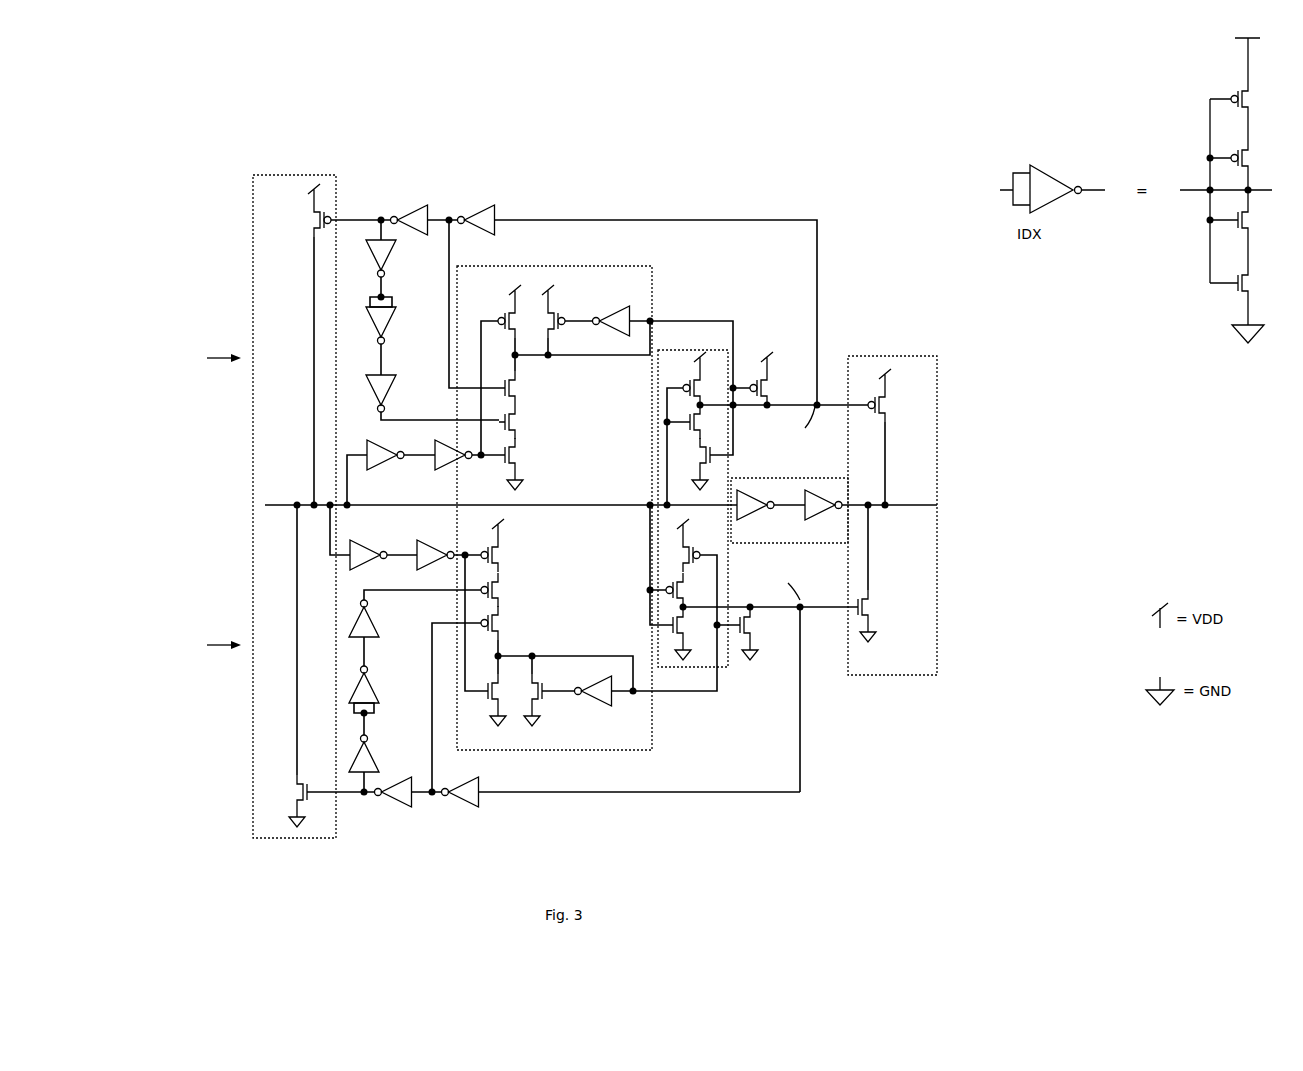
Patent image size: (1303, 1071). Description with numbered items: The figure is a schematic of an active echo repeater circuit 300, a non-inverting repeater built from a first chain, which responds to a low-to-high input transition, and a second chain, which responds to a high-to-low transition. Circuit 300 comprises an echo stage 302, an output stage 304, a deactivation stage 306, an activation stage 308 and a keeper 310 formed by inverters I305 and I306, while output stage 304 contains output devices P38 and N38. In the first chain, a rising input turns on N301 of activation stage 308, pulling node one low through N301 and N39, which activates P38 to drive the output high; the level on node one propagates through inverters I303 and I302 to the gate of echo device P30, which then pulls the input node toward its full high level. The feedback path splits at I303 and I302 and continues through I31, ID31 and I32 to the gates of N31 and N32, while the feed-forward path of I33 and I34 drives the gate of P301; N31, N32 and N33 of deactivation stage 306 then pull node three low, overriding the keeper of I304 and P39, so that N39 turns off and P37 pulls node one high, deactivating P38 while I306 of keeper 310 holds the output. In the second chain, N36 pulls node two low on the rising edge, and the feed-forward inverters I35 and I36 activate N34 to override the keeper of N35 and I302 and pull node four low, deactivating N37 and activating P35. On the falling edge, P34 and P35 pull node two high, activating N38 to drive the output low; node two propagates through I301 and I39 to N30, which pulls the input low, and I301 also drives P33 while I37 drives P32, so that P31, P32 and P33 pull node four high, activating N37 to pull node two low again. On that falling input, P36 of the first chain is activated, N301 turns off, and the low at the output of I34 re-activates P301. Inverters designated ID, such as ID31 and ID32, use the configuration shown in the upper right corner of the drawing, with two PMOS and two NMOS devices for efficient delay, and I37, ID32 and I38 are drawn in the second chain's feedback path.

The active echo repeater circuit 300 is at (571, 510).
The echo stage 302 is at (336, 838).
The output stage 304 is at (932, 677).
The deactivation stage 306 is at (630, 752).
The activation stage 308 is at (725, 668).
The keeper circuit 310 is at (789, 510).
The echo device P30 is at (309, 210).
The echo transistor N30 is at (287, 801).
The inverter I31 is at (368, 258).
The delay inverter ID31 is at (362, 325).
The inverter I32 is at (368, 393).
The inverter I33 is at (385, 464).
The inverter I34 is at (453, 464).
The inverter I35 is at (368, 549).
The inverter I36 is at (435, 547).
The inverter I37 is at (352, 618).
The delay inverter ID32 is at (345, 684).
The inverter I38 is at (352, 753).
The inverter I39 is at (393, 798).
The inverter I301 is at (459, 798).
The inverter I302 is at (409, 208).
The inverter I303 is at (478, 208).
The keeper inverter I304 is at (619, 310).
The inverter I305 is at (755, 514).
The keeper inverter I306 is at (819, 514).
The PMOS transistor P301 is at (491, 311).
The keeper transistor P39 is at (566, 311).
The NMOS transistor N31 is at (522, 388).
The NMOS transistor N32 is at (522, 422).
The NMOS transistor N33 is at (522, 464).
The PMOS transistor P31 is at (503, 545).
The PMOS transistor P32 is at (503, 590).
The PMOS transistor P33 is at (503, 623).
The NMOS transistor N34 is at (483, 700).
The keeper transistor N35 is at (545, 695).
The PMOS transistor P36 is at (702, 378).
The PMOS transistor P37 is at (769, 378).
The NMOS transistor N301 is at (708, 422).
The NMOS transistor N39 is at (718, 464).
The PMOS transistor P34 is at (683, 590).
The PMOS transistor P35 is at (683, 545).
The NMOS transistor N36 is at (688, 634).
The NMOS transistor N37 is at (757, 630).
The output device P38 is at (886, 395).
The output device N38 is at (875, 616).